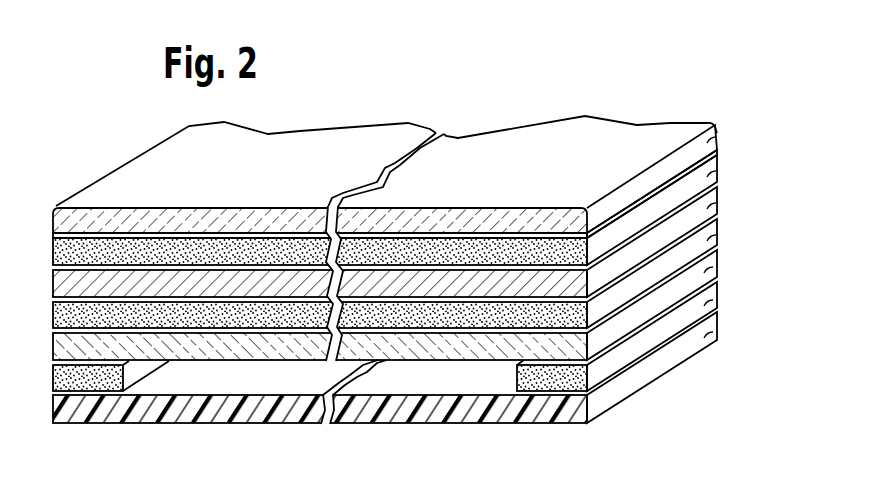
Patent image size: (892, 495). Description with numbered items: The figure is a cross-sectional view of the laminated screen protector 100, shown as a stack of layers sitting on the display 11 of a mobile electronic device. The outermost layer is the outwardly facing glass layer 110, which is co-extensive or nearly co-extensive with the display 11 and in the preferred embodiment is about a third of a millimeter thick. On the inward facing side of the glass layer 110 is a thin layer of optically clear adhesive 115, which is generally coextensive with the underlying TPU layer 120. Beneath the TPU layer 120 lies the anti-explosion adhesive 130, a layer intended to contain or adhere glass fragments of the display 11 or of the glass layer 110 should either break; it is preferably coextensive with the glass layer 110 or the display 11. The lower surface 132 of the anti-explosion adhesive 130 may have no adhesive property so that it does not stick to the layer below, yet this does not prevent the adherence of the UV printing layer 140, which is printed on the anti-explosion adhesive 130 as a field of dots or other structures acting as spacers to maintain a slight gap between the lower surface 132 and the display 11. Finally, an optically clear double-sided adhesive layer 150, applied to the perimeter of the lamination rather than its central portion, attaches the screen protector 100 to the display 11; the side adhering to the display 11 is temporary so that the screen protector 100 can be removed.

The laminated screen protector 100 is at (114, 96).
The glass layer 110 is at (718, 132).
The optically clear adhesive 115 is at (718, 167).
The TPU layer 120 is at (718, 198).
The anti-explosion adhesive 130 is at (718, 230).
The lower surface 132 is at (556, 342).
The UV printing layer 140 is at (718, 262).
The double-sided adhesive layer 150 is at (718, 293).
The display 11 is at (718, 328).